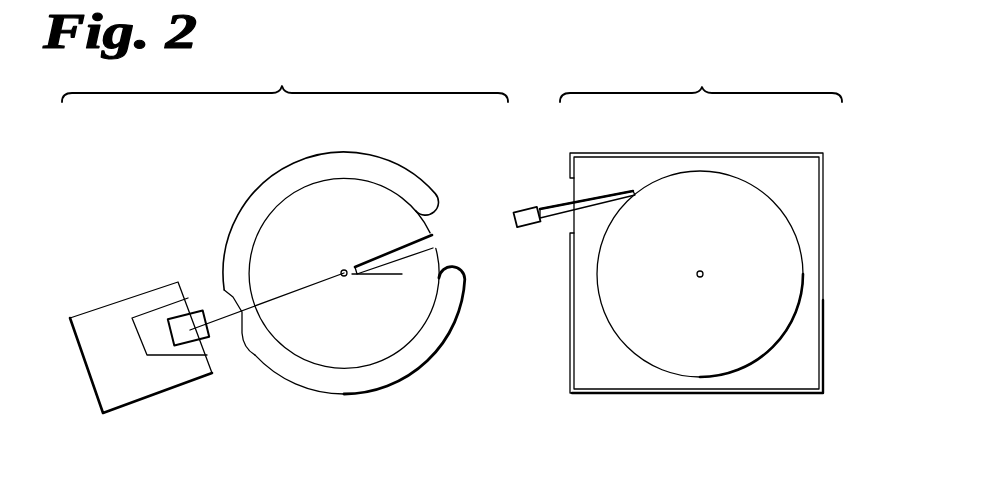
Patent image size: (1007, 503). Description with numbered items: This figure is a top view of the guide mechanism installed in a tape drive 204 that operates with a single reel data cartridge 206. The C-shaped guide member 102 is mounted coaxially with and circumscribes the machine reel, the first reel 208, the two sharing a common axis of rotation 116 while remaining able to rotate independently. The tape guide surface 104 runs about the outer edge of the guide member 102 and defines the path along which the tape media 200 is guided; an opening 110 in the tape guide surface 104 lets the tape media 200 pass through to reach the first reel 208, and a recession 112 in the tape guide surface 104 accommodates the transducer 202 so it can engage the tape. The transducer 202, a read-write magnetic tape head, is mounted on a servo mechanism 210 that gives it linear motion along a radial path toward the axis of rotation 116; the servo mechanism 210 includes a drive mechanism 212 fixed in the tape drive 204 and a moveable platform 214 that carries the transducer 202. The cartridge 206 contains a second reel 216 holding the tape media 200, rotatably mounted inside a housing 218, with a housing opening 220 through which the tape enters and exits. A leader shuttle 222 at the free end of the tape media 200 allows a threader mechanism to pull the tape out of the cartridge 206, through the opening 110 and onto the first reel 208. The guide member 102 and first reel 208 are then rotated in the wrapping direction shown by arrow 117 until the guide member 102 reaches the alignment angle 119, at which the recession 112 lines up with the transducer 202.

The guide member 102 is at (407, 362).
The tape guide surface 104 is at (334, 147).
The opening 110 is at (458, 212).
The recession 112 is at (233, 283).
The common axis of rotation 116 is at (347, 285).
The arrow 117 is at (284, 151).
The alignment angle 119 is at (384, 273).
The tape media 200 is at (598, 202).
The transducer 202 is at (175, 327).
The tape drive 204 is at (285, 80).
The single reel data cartridge 206 is at (701, 80).
The first reel 208 is at (400, 307).
The servo mechanism 210 is at (167, 402).
The drive mechanism 212 is at (113, 382).
The moveable platform 214 is at (143, 326).
The second reel 216 is at (690, 365).
The housing 218 is at (597, 393).
The housing opening 220 is at (557, 182).
The leader shuttle 222 is at (530, 230).